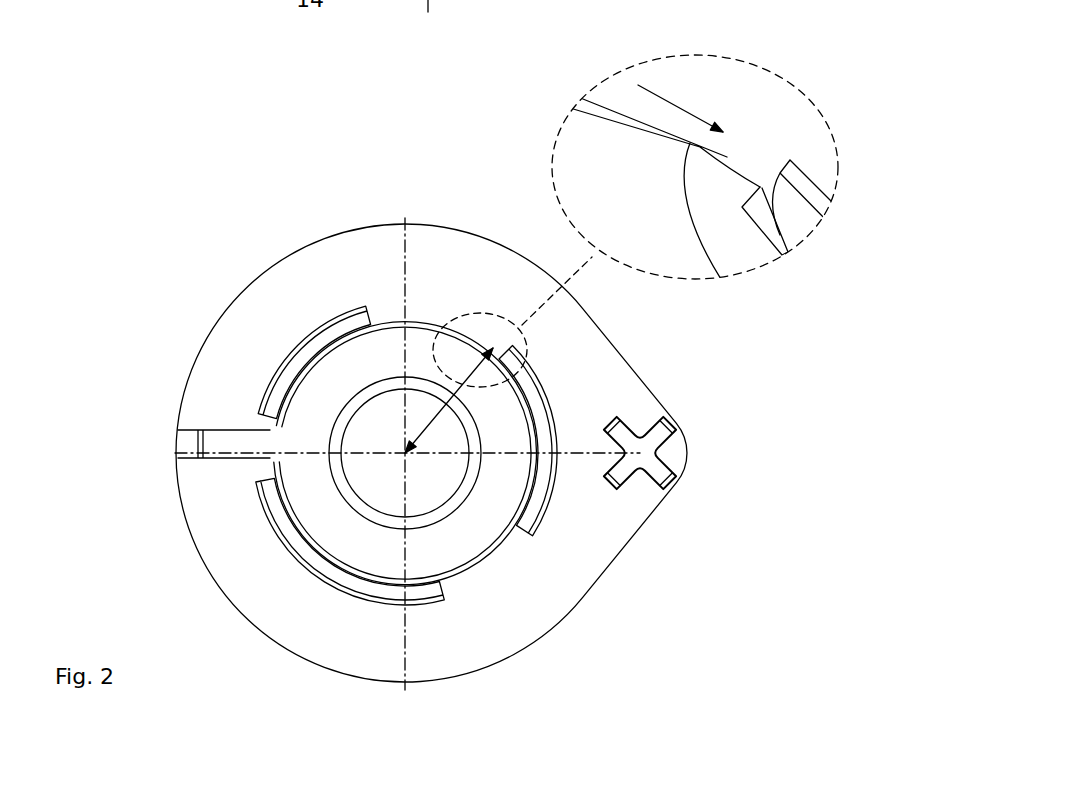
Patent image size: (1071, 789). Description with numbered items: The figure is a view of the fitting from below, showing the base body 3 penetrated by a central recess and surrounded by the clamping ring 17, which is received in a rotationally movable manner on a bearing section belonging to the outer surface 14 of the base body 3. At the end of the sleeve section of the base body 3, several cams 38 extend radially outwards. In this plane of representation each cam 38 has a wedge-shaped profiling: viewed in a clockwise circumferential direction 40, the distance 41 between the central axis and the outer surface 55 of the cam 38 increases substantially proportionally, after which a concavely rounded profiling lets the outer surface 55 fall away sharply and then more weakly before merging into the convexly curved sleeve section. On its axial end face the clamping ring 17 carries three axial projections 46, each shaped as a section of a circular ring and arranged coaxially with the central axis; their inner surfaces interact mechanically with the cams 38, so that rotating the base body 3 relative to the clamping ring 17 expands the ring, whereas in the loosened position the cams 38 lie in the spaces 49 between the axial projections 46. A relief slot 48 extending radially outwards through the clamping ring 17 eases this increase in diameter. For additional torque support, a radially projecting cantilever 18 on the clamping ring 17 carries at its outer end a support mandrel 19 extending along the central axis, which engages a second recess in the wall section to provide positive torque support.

The base body 3 is at (350, 535).
The outer surface 14 is at (728, 157).
The clamping ring 17 is at (268, 295).
The cantilever 18 is at (644, 420).
The support mandrel 19 is at (657, 470).
The cam 38 is at (740, 162).
The circumferential direction 40 is at (673, 100).
The distance 41 is at (490, 335).
The axial projections 46 is at (352, 322).
The relief slot 48 is at (232, 430).
The spaces 49 is at (508, 558).
The outer surface 55 is at (742, 296).